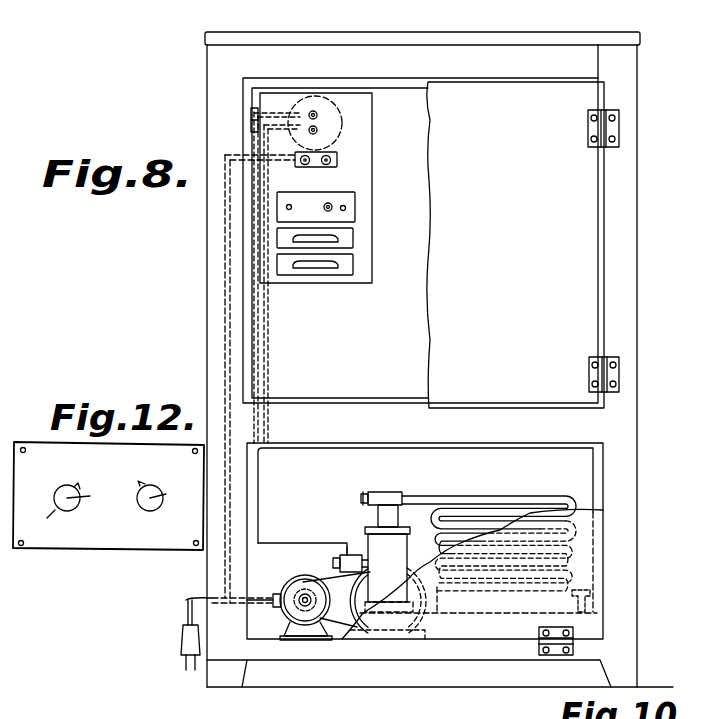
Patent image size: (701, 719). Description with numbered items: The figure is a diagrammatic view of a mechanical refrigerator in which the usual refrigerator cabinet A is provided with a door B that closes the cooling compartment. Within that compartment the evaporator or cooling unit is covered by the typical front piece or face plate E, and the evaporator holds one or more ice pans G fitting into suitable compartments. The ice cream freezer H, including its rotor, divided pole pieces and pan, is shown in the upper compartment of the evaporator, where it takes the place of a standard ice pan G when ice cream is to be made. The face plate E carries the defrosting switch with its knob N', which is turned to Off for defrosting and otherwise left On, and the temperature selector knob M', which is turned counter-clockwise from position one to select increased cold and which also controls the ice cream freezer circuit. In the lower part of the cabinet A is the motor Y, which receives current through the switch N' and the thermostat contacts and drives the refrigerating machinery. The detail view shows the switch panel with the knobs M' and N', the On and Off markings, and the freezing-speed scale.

In FIG. 8, the refrigerator cabinet A is at (646, 130).
In FIG. 8, the door B is at (523, 245).
In FIG. 8, the face plate E is at (362, 137).
In FIG. 8, the defrosting switch knob N' is at (358, 153).
In FIG. 12, the defrosting switch knob N' is at (159, 497).
In FIG. 8, the temperature selector knob M' is at (368, 177).
In FIG. 12, the temperature selector knob M' is at (73, 503).
In FIG. 8, the ice cream freezer H is at (358, 212).
In FIG. 8, the ice pans G is at (355, 240).
In FIG. 8, the motor Y is at (296, 585).